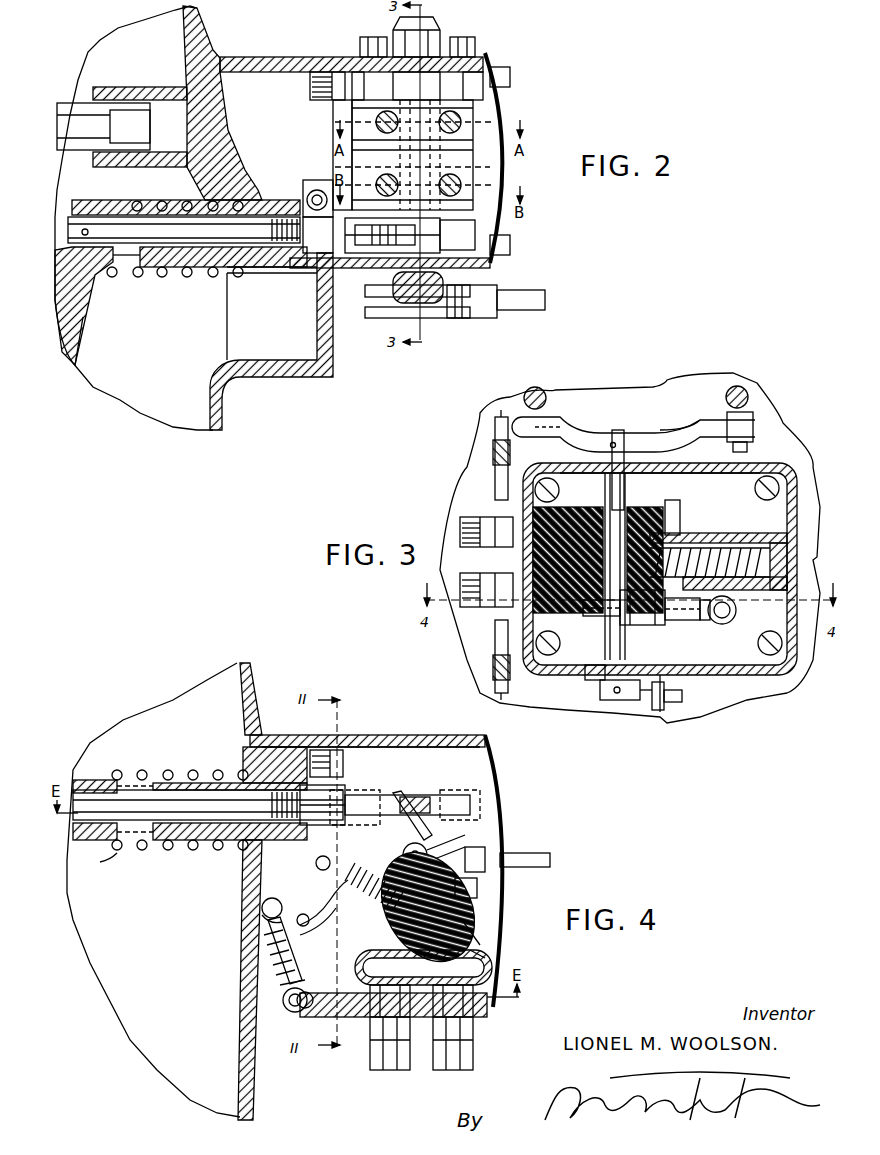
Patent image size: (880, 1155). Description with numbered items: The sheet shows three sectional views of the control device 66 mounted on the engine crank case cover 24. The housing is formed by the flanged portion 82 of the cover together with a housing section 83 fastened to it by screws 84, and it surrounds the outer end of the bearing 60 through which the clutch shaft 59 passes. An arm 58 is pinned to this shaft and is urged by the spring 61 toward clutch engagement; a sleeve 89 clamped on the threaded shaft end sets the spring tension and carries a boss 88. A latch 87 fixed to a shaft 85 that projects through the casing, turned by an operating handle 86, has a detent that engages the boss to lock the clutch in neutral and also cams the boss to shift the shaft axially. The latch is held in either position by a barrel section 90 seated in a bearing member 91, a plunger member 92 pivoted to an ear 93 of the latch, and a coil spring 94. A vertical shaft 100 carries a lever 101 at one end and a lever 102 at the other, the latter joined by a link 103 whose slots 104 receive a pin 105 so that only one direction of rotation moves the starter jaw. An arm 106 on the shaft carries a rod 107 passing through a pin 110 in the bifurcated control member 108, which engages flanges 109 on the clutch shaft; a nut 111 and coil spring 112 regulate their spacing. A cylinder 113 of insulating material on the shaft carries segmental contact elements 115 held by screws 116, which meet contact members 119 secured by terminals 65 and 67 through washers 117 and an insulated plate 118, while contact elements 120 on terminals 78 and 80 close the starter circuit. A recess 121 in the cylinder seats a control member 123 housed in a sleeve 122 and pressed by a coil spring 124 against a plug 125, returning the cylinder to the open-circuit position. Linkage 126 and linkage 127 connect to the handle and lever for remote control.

In FIG. 2, the crank case cover 24 is at (220, 403).
In FIG. 4, the crank case cover 24 is at (253, 1080).
In FIG. 2, the arm 58 is at (83, 317).
In FIG. 4, the arm 58 is at (117, 853).
In FIG. 2, the shaft 59 is at (147, 233).
In FIG. 4, the shaft 59 is at (143, 847).
In FIG. 2, the bearing 60 is at (210, 265).
In FIG. 4, the bearing 60 is at (213, 787).
In FIG. 2, the spring 61 is at (160, 267).
In FIG. 4, the spring 61 is at (197, 847).
In FIG. 2, the terminal 65 is at (385, 185).
In FIG. 3, the terminal 65 is at (480, 610).
In FIG. 4, the terminal 65 is at (390, 1040).
In FIG. 3, the control device 66 is at (722, 463).
In FIG. 4, the control device 66 is at (452, 730).
In FIG. 2, the terminal 67 is at (470, 187).
In FIG. 4, the terminal 67 is at (453, 1040).
In FIG. 2, the terminal 78 is at (340, 113).
In FIG. 3, the terminal 78 is at (493, 530).
In FIG. 2, the terminal 80 is at (458, 113).
In FIG. 2, the flanged portion 82 is at (240, 57).
In FIG. 4, the flanged portion 82 is at (280, 735).
In FIG. 2, the housing section 83 is at (482, 60).
In FIG. 3, the housing section 83 is at (750, 463).
In FIG. 4, the housing section 83 is at (367, 737).
In FIG. 2, the screws 84 is at (353, 57).
In FIG. 3, the screws 84 is at (773, 483).
In FIG. 4, the screws 84 is at (363, 767).
In FIG. 3, the shaft 85 is at (660, 440).
In FIG. 4, the shaft 85 is at (262, 910).
In FIG. 3, the operating handle 86 is at (573, 420).
In FIG. 4, the latch 87 is at (302, 930).
In FIG. 4, the boss 88 is at (330, 860).
In FIG. 2, the sleeve 89 is at (305, 200).
In FIG. 4, the sleeve 89 is at (317, 780).
In FIG. 4, the barrel section 90 is at (273, 973).
In FIG. 4, the bearing member 91 is at (283, 1013).
In FIG. 4, the plunger member 92 is at (273, 953).
In FIG. 4, the ear 93 is at (263, 927).
In FIG. 4, the coil spring 94 is at (273, 997).
In FIG. 2, the shaft 100 is at (433, 18).
In FIG. 3, the shaft 100 is at (607, 473).
In FIG. 4, the shaft 100 is at (468, 898).
In FIG. 2, the lever 101 is at (440, 32).
In FIG. 3, the lever 101 is at (703, 423).
In FIG. 3, the lever 102 is at (633, 703).
In FIG. 2, the link 103 is at (470, 307).
In FIG. 3, the link 103 is at (687, 707).
In FIG. 4, the link 103 is at (553, 853).
In FIG. 2, the slots 104 is at (385, 313).
In FIG. 3, the slots 104 is at (667, 690).
In FIG. 2, the pin 105 is at (433, 320).
In FIG. 3, the pin 105 is at (670, 712).
In FIG. 2, the arm 106 is at (490, 263).
In FIG. 3, the arm 106 is at (580, 655).
In FIG. 4, the arm 106 is at (340, 993).
In FIG. 4, the rod 107 is at (374, 875).
In FIG. 3, the control member 108 is at (607, 650).
In FIG. 4, the control member 108 is at (463, 860).
In FIG. 3, the flanges 109 is at (730, 667).
In FIG. 4, the flanges 109 is at (440, 803).
In FIG. 3, the pin 110 is at (697, 670).
In FIG. 4, the pin 110 is at (430, 847).
In FIG. 3, the nut 111 is at (727, 670).
In FIG. 4, the nut 111 is at (433, 833).
In FIG. 4, the coil spring 112 is at (393, 847).
In FIG. 3, the cylinder 113 is at (660, 520).
In FIG. 4, the cylinder 113 is at (477, 890).
In FIG. 4, the segmental contact elements 115 is at (485, 957).
In FIG. 4, the screws 116 is at (470, 933).
In FIG. 3, the washers 117 is at (498, 670).
In FIG. 4, the washers 117 is at (480, 1013).
In FIG. 3, the insulated plate 118 is at (513, 497).
In FIG. 4, the insulated plate 118 is at (497, 997).
In FIG. 2, the contact members 119 is at (487, 203).
In FIG. 4, the contact members 119 is at (500, 963).
In FIG. 2, the contact elements 120 is at (490, 117).
In FIG. 3, the recess 121 is at (660, 530).
In FIG. 3, the sleeve 122 is at (723, 537).
In FIG. 3, the control member 123 is at (797, 597).
In FIG. 3, the coil spring 124 is at (793, 560).
In FIG. 3, the plug 125 is at (793, 547).
In FIG. 3, the linkage 126 is at (540, 387).
In FIG. 3, the linkage 127 is at (747, 393).